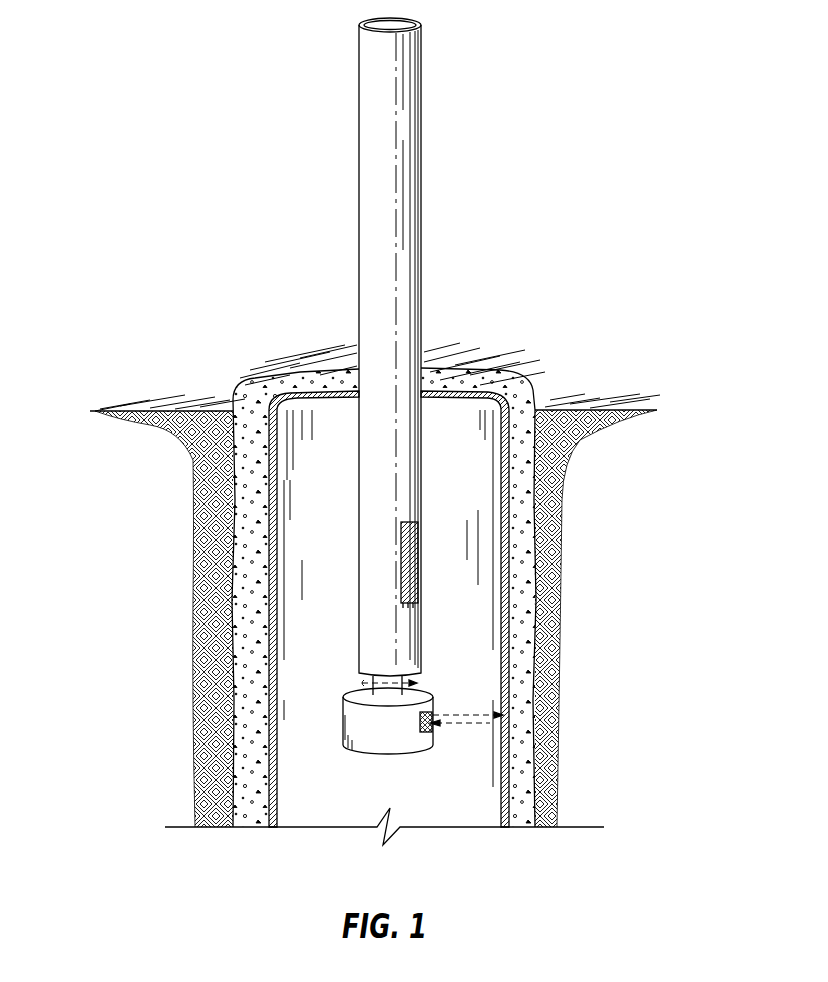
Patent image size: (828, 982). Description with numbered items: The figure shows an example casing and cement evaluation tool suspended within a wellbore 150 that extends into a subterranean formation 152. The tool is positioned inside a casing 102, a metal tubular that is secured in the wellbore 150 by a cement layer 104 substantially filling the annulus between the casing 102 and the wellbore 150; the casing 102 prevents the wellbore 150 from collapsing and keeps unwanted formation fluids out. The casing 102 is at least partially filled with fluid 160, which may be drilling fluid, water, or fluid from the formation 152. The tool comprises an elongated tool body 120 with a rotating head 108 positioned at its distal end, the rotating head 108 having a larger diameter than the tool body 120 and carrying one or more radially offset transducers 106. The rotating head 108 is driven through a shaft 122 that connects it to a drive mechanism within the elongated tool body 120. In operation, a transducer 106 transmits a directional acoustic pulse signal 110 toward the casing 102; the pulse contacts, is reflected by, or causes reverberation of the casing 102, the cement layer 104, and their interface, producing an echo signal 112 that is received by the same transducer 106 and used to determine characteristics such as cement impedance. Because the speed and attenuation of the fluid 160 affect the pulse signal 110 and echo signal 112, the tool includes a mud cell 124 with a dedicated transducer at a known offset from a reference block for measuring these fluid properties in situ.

The casing 102 is at (332, 392).
The cement layer 104 is at (431, 567).
The transducer 106 is at (422, 724).
The rotating head 108 is at (355, 725).
The directional acoustic pulse signal 110 is at (478, 712).
The echo signal 112 is at (470, 725).
The elongated tool body 120 is at (418, 222).
The shaft 122 is at (372, 688).
The mud cell 124 is at (420, 555).
The wellbore 150 is at (262, 570).
The subterranean formation 152 is at (560, 578).
The fluid 160 is at (460, 415).